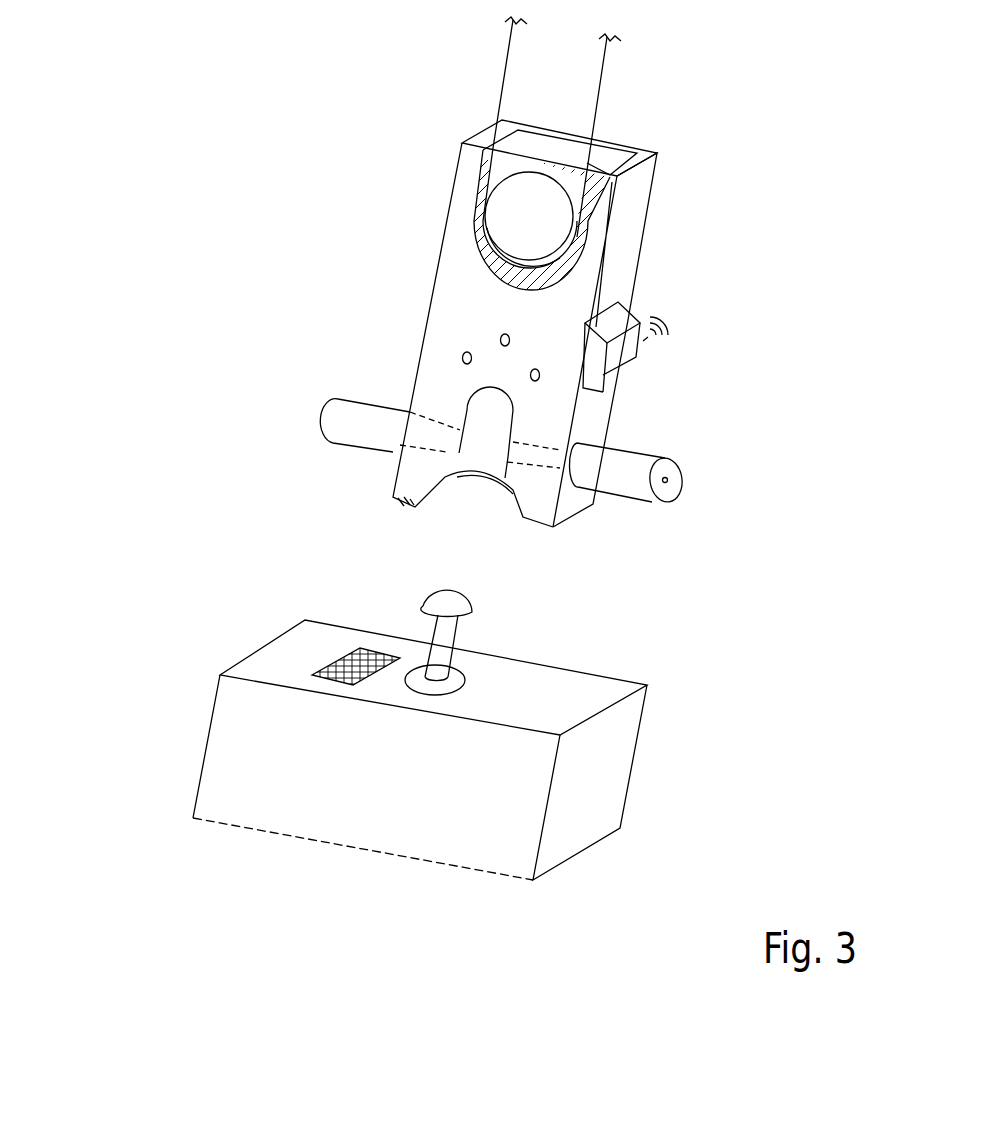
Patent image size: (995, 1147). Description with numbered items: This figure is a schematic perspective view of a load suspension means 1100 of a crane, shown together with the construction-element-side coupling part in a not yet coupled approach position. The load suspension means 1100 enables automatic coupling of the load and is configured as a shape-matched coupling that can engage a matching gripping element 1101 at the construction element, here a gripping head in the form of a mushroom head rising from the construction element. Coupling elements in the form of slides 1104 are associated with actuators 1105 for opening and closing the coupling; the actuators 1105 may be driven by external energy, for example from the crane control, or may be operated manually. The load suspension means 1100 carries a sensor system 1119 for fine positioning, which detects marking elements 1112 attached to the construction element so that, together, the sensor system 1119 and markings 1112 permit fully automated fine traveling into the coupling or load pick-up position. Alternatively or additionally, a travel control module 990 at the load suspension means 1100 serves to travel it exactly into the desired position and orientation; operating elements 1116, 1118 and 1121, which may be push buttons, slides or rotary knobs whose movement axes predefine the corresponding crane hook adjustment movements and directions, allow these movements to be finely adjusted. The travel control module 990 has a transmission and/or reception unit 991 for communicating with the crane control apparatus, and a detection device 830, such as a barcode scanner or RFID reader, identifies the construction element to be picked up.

The load suspension means 1100 is at (343, 396).
The travel control module 990 is at (457, 330).
The operating element 1116 is at (500, 335).
The operating element 1121 is at (463, 358).
The operating element 1118 is at (538, 378).
The detection device 830 is at (633, 360).
The transmission and/or reception unit 991 is at (628, 322).
The actuators 1105 is at (347, 421).
The slides 1104 is at (433, 435).
The sensor system 1119 is at (407, 503).
The marking elements 1112 is at (330, 658).
The gripping element 1101 is at (463, 605).